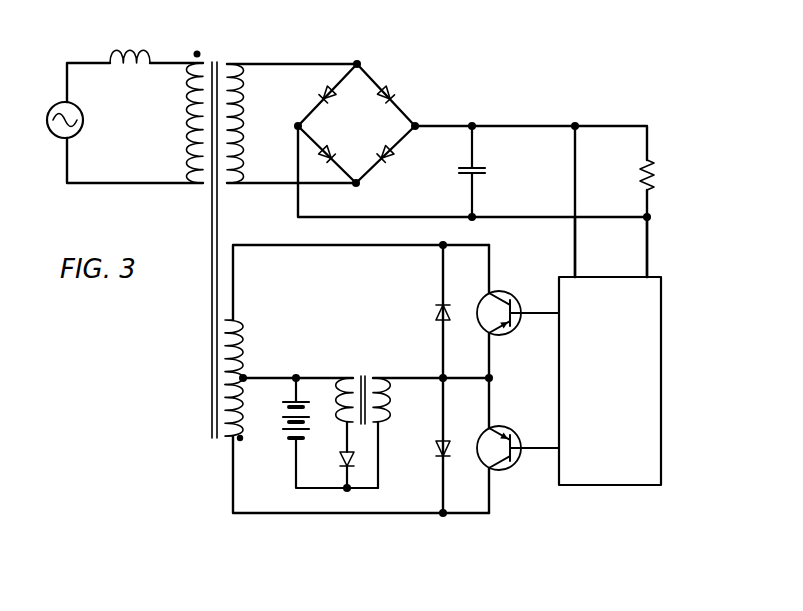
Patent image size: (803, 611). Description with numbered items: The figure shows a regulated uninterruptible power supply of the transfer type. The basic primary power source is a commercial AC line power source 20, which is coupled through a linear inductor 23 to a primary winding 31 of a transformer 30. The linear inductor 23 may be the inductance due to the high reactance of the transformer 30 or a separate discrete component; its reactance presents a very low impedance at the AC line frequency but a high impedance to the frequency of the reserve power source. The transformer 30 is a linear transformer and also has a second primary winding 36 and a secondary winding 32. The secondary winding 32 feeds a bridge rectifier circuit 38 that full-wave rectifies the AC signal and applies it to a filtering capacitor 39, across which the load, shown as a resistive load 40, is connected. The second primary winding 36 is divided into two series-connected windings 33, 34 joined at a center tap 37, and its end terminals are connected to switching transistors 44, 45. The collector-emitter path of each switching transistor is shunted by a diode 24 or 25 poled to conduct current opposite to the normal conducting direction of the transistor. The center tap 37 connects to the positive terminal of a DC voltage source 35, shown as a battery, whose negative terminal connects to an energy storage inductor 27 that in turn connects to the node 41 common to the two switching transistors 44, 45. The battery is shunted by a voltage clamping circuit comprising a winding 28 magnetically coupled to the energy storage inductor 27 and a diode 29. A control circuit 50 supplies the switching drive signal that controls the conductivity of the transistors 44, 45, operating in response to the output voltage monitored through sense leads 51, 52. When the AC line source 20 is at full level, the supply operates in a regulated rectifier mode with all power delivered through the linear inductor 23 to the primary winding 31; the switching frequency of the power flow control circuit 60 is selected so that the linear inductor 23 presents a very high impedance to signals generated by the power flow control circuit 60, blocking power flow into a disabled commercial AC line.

The commercial AC line power source 20 is at (79, 120).
The linear inductor 23 is at (130, 47).
The transformer 30 is at (213, 233).
The primary winding 31 is at (188, 123).
The secondary winding 32 is at (245, 123).
The bridge rectifier circuit 38 is at (346, 131).
The filtering capacitor 39 is at (486, 171).
The resistive load 40 is at (660, 175).
The sense lead 51 is at (575, 247).
The sense lead 52 is at (647, 247).
The control circuit 50 is at (661, 380).
The switching transistor 44 is at (518, 304).
The switching transistor 45 is at (518, 438).
The node 41 is at (492, 378).
The diode 24 is at (428, 311).
The diode 25 is at (428, 445).
The second primary winding 36 is at (228, 390).
The winding 33 is at (245, 330).
The winding 34 is at (240, 433).
The center tap 37 is at (245, 376).
The DC voltage source 35 is at (316, 433).
The power flow control circuit 60 is at (363, 375).
The winding 28 is at (333, 400).
The energy storage inductor 27 is at (393, 400).
The diode 29 is at (334, 455).